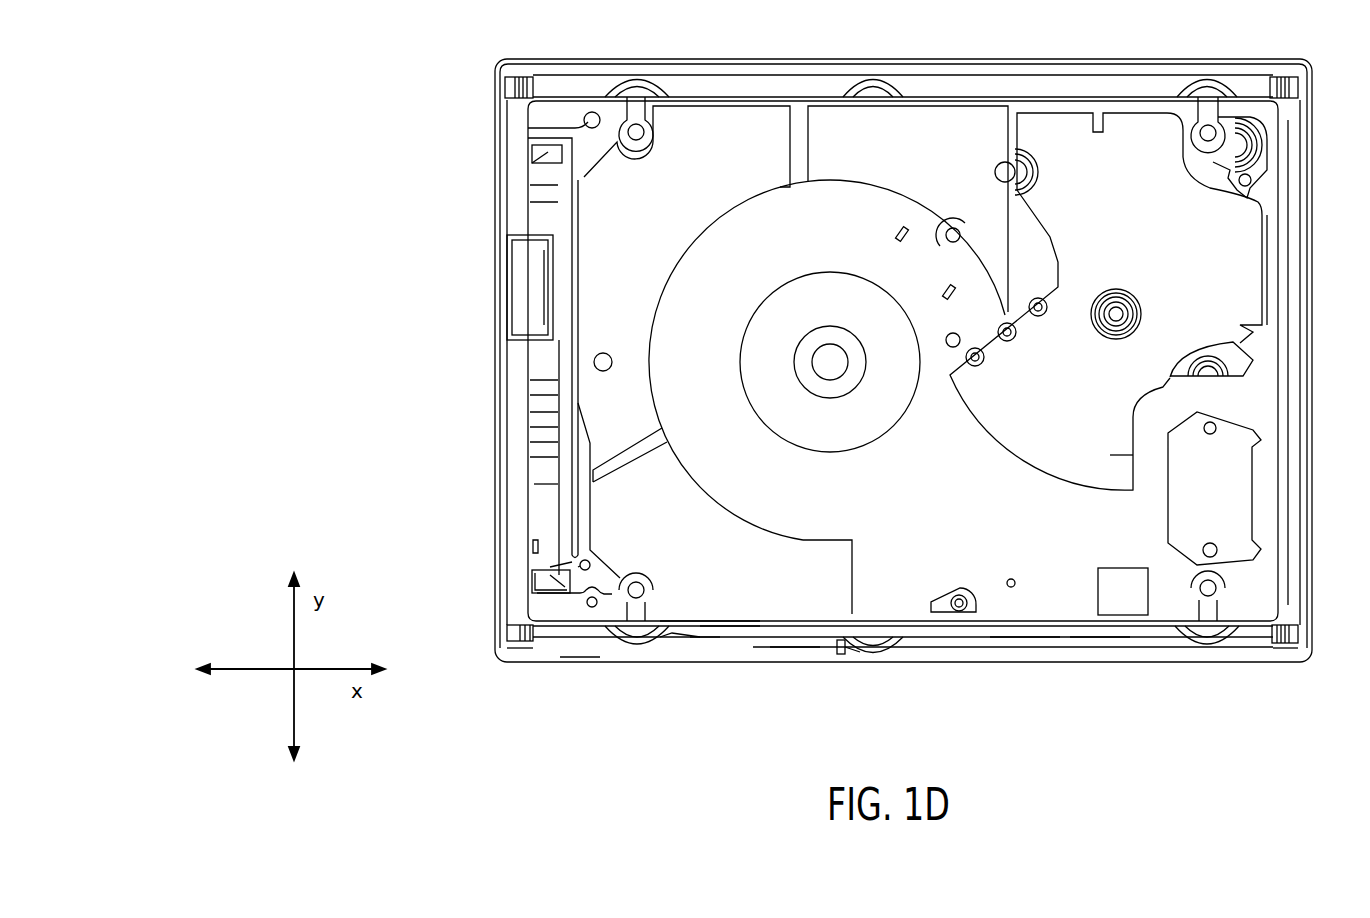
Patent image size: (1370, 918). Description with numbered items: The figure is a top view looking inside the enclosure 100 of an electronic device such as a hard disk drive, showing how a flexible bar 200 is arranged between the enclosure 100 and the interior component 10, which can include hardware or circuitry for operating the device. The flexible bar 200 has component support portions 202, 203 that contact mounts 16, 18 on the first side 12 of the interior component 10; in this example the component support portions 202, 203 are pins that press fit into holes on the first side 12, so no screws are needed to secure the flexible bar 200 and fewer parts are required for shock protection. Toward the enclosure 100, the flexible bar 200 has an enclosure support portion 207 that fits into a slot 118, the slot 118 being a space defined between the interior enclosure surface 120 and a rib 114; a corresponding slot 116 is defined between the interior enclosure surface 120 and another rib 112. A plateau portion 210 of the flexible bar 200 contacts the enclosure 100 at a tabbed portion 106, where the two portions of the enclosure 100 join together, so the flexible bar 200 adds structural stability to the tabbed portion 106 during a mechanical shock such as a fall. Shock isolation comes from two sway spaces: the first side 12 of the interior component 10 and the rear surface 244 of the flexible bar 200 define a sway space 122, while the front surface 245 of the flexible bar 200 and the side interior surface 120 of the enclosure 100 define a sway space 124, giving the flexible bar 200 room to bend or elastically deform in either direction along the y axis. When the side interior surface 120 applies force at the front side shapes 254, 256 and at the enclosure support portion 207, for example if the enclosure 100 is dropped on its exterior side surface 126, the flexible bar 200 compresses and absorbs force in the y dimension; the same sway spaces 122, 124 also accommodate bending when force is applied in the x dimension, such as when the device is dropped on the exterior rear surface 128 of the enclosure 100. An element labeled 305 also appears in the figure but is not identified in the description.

The interior component 10 is at (947, 504).
The first side 12 is at (1010, 610).
The mount 16 is at (1218, 586).
The mount 18 is at (645, 586).
The enclosure 100 is at (497, 447).
The tabbed portion 106 is at (878, 655).
The rib 112 is at (1300, 612).
The rib 114 is at (507, 622).
The slot 116 is at (1315, 363).
The slot 118 is at (488, 363).
The interior enclosure surface 120 is at (795, 649).
The sway space 122 is at (1096, 645).
The sway space 124 is at (1025, 650).
The exterior side surface 126 is at (576, 658).
The exterior rear surface 128 is at (500, 520).
The flexible bar 200 is at (646, 670).
The component support portion 202 is at (1210, 612).
The component support portion 203 is at (645, 610).
The enclosure support portion 207 is at (514, 650).
The plateau portion 210 is at (843, 655).
The rear surface 244 is at (703, 625).
The front surface 245 is at (700, 640).
The front side shape 254 is at (1198, 650).
The front side shape 256 is at (625, 647).
The corner portion 305 is at (1295, 648).